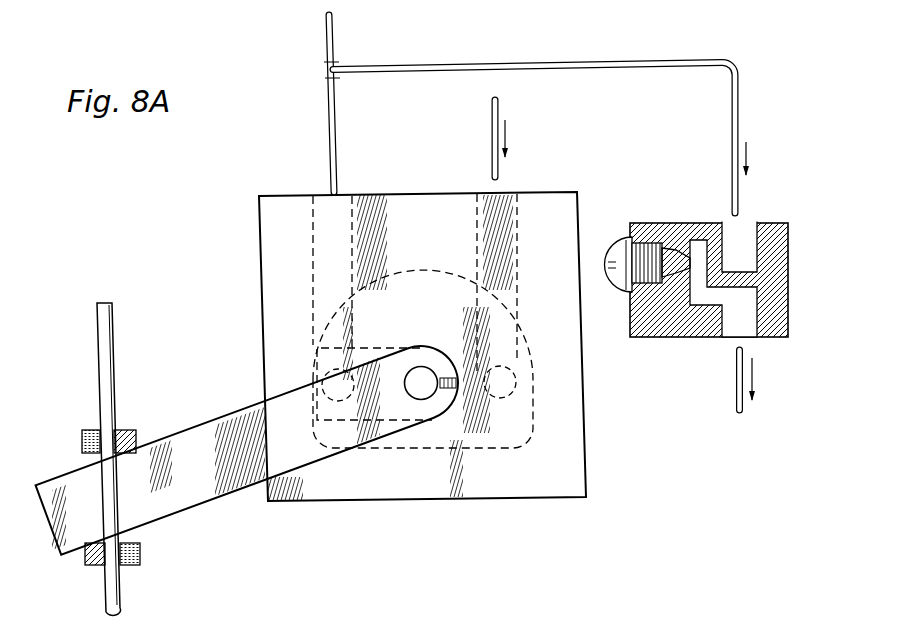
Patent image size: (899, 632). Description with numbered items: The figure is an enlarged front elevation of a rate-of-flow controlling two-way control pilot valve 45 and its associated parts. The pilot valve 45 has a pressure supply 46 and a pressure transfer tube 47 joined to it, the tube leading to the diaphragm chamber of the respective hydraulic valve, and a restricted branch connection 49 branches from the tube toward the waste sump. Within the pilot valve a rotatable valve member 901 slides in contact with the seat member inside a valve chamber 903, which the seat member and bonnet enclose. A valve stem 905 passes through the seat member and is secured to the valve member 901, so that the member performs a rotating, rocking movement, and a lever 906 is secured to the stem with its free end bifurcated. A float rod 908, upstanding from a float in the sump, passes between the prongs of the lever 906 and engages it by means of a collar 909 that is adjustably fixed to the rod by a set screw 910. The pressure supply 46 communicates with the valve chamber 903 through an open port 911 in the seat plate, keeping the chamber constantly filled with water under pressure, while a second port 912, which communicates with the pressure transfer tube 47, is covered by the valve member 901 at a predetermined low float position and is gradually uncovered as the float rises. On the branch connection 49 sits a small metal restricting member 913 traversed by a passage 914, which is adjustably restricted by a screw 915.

The two-way control pilot valve 45 is at (556, 194).
The pressure supply 46 is at (499, 110).
The pressure transfer tube 47 is at (336, 30).
The restricted branch connection 49 is at (739, 102).
The rotatable valve member 901 is at (314, 356).
The valve chamber 903 is at (516, 438).
The valve stem 905 is at (433, 395).
The lever 906 is at (250, 489).
The float rod 908 is at (114, 375).
The collar 909 is at (126, 430).
The set screw 910 is at (82, 441).
The open port 911 is at (512, 370).
The second port 912 is at (320, 380).
The restricting member 913 is at (676, 228).
The passage 914 is at (742, 232).
The screw 915 is at (672, 276).